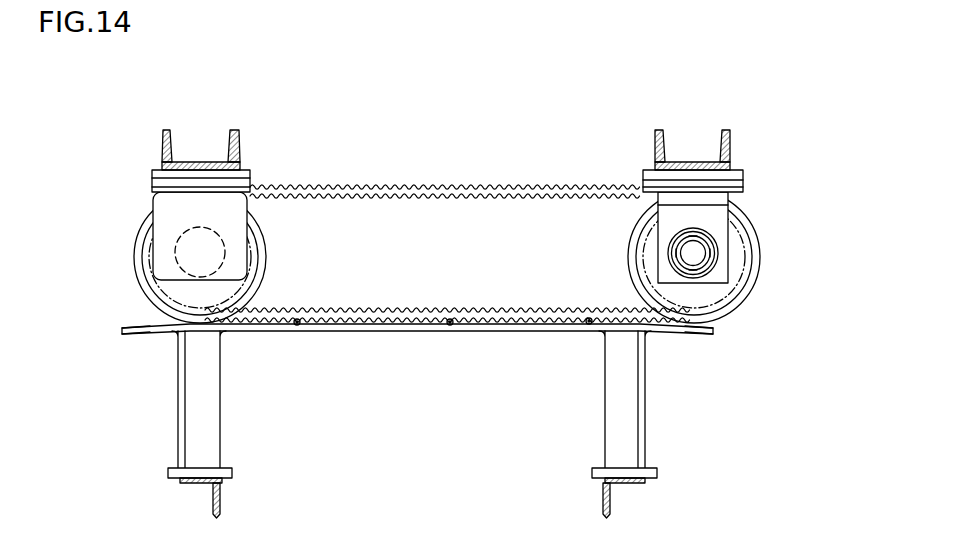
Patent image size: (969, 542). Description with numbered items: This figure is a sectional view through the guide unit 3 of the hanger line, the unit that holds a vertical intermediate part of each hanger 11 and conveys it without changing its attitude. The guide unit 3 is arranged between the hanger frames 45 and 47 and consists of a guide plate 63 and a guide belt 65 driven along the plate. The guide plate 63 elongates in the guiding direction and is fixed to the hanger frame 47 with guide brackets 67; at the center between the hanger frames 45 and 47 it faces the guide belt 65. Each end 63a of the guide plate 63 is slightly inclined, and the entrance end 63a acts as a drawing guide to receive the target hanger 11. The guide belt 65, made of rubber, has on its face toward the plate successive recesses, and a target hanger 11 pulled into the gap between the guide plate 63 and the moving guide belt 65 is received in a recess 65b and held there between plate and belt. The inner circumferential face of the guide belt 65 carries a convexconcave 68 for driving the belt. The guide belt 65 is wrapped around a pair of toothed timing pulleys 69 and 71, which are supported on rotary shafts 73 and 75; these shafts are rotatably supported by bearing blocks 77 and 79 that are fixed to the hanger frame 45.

The guide unit 3 is at (447, 261).
The hanger 11 is at (299, 332).
The hanger frame 45 is at (240, 143).
The hanger frame 47 is at (221, 505).
The guide plate 63 is at (412, 331).
The end of guide plate 63a is at (122, 329).
The guide belt 65 is at (447, 344).
The recess 65b is at (508, 321).
The guide bracket 67 is at (221, 418).
The convexconcave 68 is at (363, 310).
The toothed timing pulley 69 is at (140, 232).
The toothed timing pulley 71 is at (760, 240).
The rotary shaft 73 is at (197, 277).
The rotary shaft 75 is at (717, 257).
The bearing block 77 is at (228, 217).
The bearing block 79 is at (675, 217).